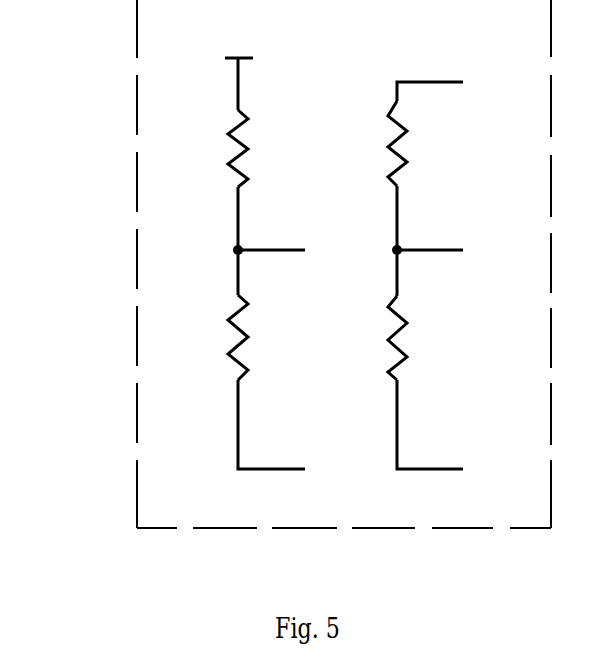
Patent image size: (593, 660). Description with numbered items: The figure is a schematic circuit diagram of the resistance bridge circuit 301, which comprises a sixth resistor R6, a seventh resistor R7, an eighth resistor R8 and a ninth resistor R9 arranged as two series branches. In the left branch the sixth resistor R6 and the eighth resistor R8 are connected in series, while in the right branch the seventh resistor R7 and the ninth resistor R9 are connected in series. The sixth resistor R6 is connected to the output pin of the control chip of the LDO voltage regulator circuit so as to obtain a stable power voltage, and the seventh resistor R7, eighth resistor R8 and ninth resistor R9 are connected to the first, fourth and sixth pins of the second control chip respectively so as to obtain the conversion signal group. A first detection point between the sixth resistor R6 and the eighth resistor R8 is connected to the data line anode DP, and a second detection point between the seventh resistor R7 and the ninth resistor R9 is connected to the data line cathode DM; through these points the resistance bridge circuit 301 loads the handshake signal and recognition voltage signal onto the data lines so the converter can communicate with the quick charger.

The resistance bridge circuit 301 is at (137, 378).
The sixth resistor R6 is at (260, 148).
The seventh resistor R7 is at (426, 143).
The eighth resistor R8 is at (259, 337).
The ninth resistor R9 is at (421, 338).